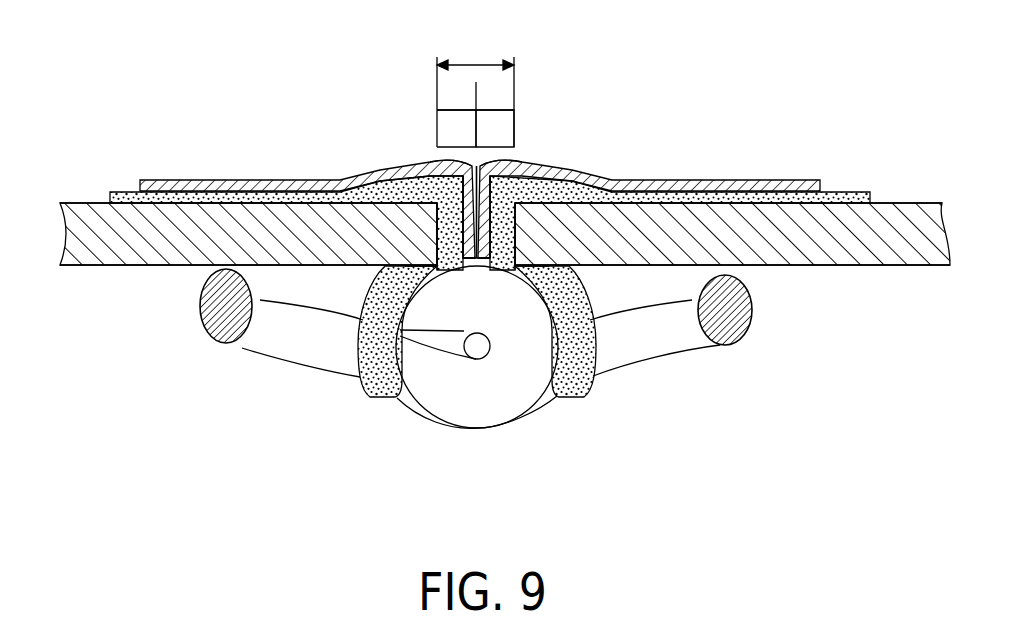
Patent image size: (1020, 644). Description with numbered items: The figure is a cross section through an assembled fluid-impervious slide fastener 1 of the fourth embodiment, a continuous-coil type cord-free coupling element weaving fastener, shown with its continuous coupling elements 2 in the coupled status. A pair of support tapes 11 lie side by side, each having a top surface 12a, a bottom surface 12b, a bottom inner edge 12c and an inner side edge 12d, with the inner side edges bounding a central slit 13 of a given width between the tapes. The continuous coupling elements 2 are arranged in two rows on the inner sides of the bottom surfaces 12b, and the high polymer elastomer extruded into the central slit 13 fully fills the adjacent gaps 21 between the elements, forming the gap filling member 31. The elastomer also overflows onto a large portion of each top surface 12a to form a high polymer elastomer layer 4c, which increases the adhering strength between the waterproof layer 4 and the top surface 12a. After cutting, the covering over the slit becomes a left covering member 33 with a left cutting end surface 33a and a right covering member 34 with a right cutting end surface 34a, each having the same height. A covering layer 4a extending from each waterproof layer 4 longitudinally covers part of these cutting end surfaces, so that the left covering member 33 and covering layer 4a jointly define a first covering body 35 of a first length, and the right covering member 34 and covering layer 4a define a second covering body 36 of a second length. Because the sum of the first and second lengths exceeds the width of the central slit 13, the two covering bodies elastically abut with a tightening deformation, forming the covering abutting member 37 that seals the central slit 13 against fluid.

The slide fastener 1 is at (176, 142).
The support tape 11 is at (83, 227).
The top surface 12a is at (75, 202).
The bottom surface 12b is at (122, 266).
The bottom inner edge 12c is at (418, 268).
The inner side edge 12d is at (433, 240).
The central slit 13 is at (490, 50).
The continuous coupling elements 2 is at (267, 335).
The adjacent gap 21 is at (443, 388).
The gap filling member 31 is at (383, 372).
The left covering member 33 is at (436, 228).
The left cutting end surface 33a is at (453, 228).
The right covering member 34 is at (516, 228).
The right cutting end surface 34a is at (499, 228).
The first covering body 35 is at (456, 128).
The second covering body 36 is at (495, 128).
The covering abutting member 37 is at (475, 48).
The waterproof layer 4 is at (307, 185).
The covering layer 4a is at (442, 165).
The high polymer elastomer layer 4c is at (252, 197).